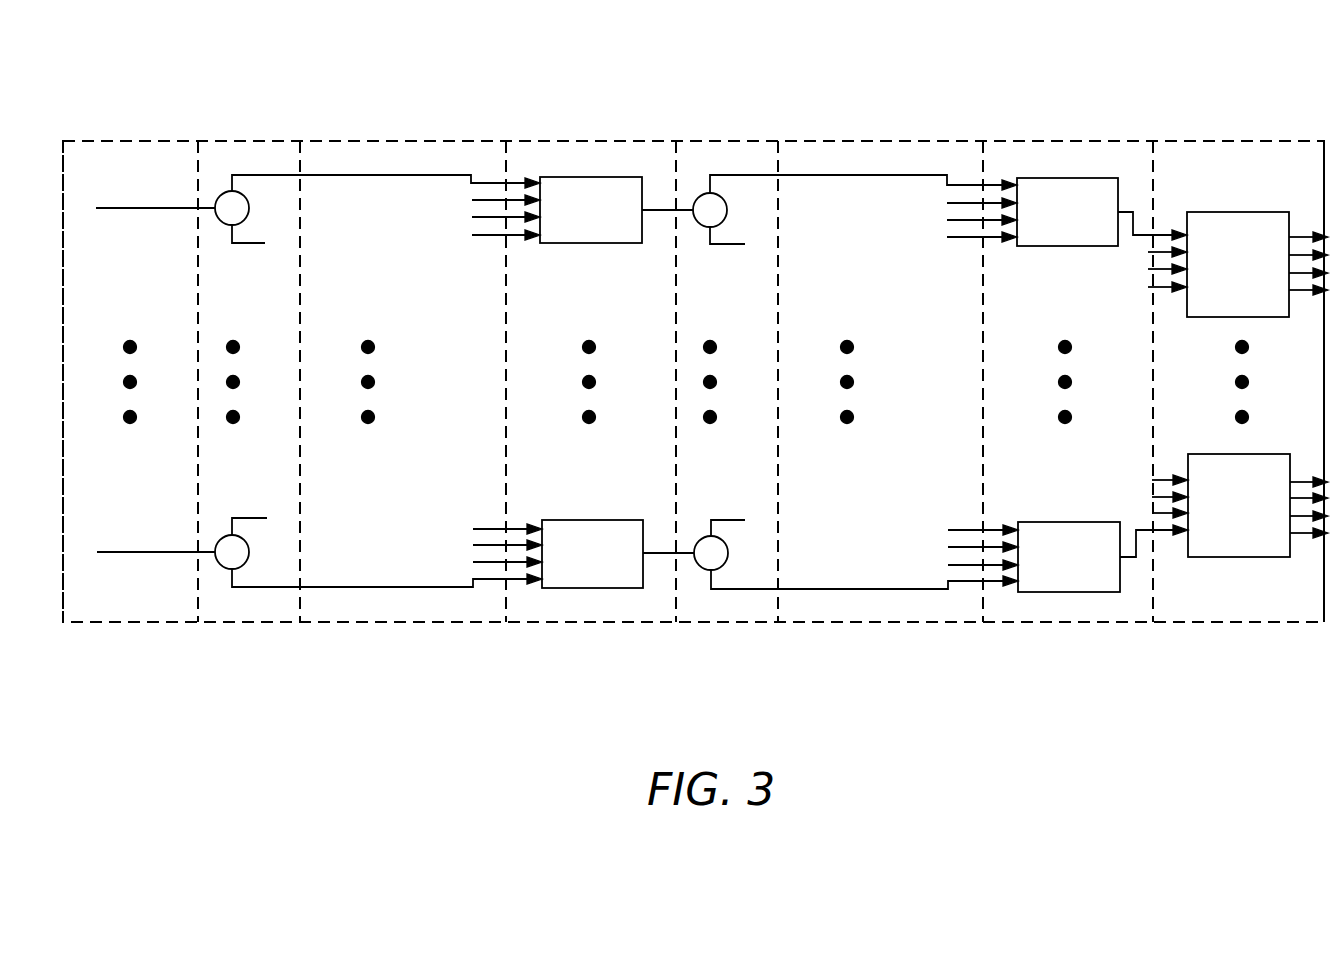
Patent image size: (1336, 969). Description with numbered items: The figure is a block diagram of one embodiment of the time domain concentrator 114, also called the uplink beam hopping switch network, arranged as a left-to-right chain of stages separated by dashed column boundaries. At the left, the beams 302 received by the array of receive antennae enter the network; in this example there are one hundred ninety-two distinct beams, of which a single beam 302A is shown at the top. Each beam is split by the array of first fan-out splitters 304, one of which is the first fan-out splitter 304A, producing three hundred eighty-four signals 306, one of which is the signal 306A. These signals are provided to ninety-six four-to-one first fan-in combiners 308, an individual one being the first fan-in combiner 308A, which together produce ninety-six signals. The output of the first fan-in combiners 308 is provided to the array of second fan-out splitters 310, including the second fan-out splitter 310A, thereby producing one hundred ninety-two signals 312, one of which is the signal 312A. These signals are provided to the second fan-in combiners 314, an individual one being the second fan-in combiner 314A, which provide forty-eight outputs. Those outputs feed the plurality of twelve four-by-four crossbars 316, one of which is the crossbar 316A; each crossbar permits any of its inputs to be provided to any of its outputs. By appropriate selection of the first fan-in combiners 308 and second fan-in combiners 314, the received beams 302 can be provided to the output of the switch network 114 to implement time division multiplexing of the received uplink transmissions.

The time domain concentrator 114 is at (798, 96).
The beams 302 is at (139, 375).
The beam 302A is at (172, 210).
The first fan-out splitters 304 is at (262, 389).
The first fan-out splitter 304A is at (250, 214).
The signals 306 is at (391, 375).
The signal 306A is at (423, 175).
The first fan-in combiners 308 is at (600, 389).
The first fan-in combiner 308A is at (563, 243).
The second fan-out splitters 310 is at (727, 389).
The second fan-out splitter 310A is at (727, 215).
The signals 312 is at (868, 375).
The signal 312A is at (892, 175).
The second fan-in combiners 314 is at (1085, 389).
The second fan-in combiner 314A is at (1048, 246).
The 4×4 crossbars 316 is at (1238, 375).
The 4×4 crossbar 316A is at (1210, 317).